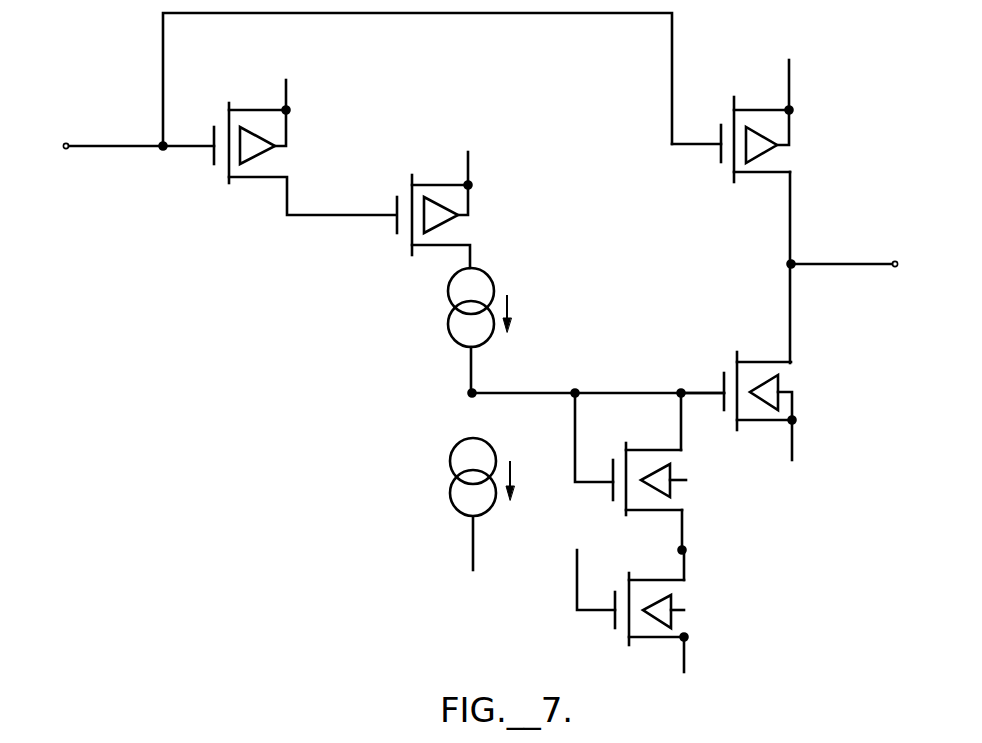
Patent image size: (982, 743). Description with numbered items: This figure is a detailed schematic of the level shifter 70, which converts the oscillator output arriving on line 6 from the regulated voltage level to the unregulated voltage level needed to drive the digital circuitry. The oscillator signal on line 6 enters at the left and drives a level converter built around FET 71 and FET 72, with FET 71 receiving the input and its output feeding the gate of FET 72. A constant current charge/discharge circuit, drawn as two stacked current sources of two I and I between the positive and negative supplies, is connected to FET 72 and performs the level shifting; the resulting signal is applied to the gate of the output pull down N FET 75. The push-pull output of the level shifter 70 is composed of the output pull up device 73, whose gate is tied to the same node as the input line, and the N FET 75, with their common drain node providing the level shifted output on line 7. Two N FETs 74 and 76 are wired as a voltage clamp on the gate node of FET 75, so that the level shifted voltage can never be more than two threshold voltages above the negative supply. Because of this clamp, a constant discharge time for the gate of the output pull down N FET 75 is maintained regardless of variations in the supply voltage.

The line 6 is at (64, 143).
The output line 7 is at (887, 262).
The level shifter 70 is at (873, 66).
The FET 71 is at (291, 146).
The FET 72 is at (476, 221).
The output pull up FET 73 is at (782, 153).
The N FET 74 is at (698, 503).
The output pull down N FET 75 is at (796, 386).
The N FET 76 is at (700, 613).